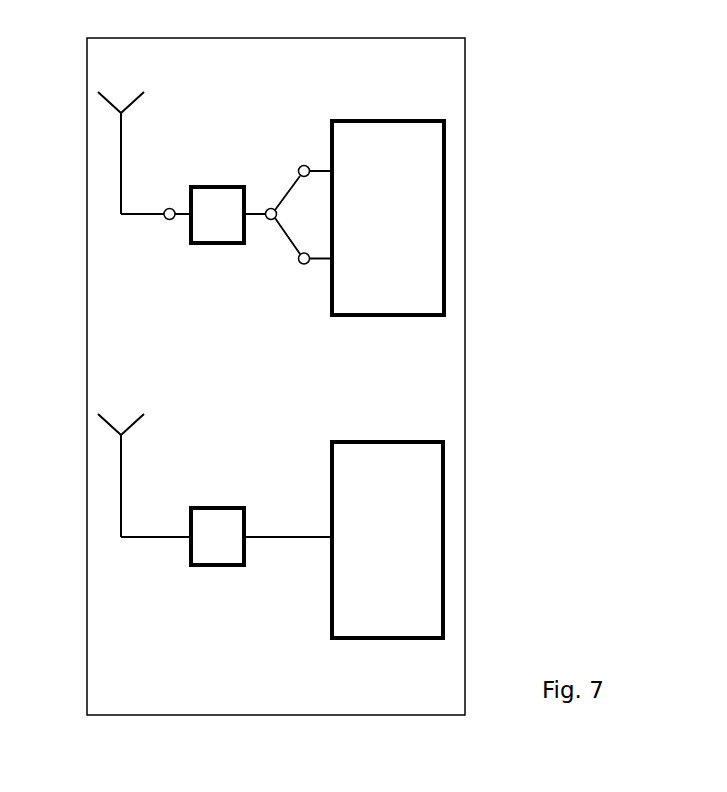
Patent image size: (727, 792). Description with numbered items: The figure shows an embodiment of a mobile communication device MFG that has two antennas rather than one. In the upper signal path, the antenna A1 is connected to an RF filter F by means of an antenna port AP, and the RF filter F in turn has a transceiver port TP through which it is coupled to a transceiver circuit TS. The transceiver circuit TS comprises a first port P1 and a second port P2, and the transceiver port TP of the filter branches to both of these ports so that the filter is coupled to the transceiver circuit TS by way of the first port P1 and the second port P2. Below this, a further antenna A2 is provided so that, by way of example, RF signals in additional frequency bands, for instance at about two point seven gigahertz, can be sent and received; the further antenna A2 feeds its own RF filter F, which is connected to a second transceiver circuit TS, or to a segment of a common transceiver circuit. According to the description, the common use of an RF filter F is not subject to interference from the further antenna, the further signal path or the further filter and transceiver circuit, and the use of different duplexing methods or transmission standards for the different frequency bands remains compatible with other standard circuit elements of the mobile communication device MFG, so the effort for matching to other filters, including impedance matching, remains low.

The mobile communication device MFG is at (465, 135).
The antenna A1 is at (121, 180).
The further antenna A2 is at (121, 495).
The antenna port AP is at (170, 220).
The RF filter F is at (215, 187).
The transceiver port TP is at (269, 219).
The first port P1 is at (304, 165).
The second port P2 is at (304, 264).
The transceiver circuit TS is at (445, 218).